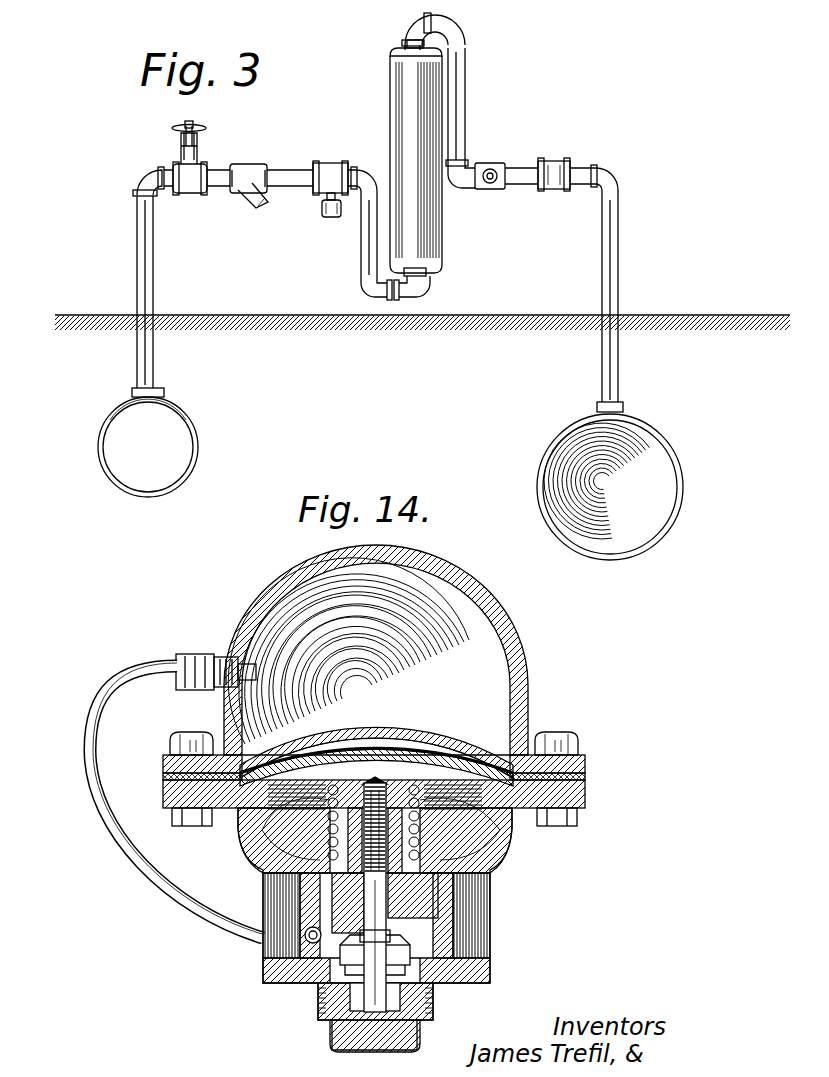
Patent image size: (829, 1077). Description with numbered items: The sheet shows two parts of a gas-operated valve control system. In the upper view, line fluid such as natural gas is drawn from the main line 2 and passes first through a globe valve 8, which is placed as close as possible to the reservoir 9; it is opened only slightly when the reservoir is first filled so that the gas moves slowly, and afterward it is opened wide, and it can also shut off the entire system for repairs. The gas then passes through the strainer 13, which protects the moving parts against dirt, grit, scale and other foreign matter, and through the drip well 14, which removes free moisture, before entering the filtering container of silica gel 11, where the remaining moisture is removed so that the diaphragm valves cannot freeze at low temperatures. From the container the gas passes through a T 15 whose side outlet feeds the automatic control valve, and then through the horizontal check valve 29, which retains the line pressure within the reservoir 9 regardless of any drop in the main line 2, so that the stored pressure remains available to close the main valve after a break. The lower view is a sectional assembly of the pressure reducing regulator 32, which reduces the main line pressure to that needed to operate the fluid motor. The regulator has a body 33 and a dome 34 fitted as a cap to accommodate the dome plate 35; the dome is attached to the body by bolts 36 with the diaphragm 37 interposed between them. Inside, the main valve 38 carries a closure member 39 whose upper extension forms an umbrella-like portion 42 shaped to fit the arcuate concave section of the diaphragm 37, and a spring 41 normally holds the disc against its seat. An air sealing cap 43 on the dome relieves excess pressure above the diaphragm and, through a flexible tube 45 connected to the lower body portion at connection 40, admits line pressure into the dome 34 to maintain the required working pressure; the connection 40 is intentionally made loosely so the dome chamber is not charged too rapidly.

In FIG. 3, the main line 2 is at (197, 428).
In FIG. 3, the globe valve 8 is at (199, 173).
In FIG. 3, the reservoir 9 is at (668, 441).
In FIG. 3, the filtering container of silica gel 11 is at (402, 108).
In FIG. 3, the strainer 13 is at (248, 168).
In FIG. 3, the drip well 14 is at (328, 167).
In FIG. 3, the T 15 is at (483, 166).
In FIG. 3, the horizontal check valve 29 is at (557, 158).
In FIG. 14, the pressure reducing regulator 32 is at (240, 844).
In FIG. 14, the body 33 is at (320, 1004).
In FIG. 14, the dome 34 is at (280, 586).
In FIG. 14, the dome plate 35 is at (356, 748).
In FIG. 14, the bolts 36 is at (166, 744).
In FIG. 14, the diaphragm 37 is at (291, 760).
In FIG. 14, the main valve 38 is at (300, 986).
In FIG. 14, the closure member 39 is at (410, 939).
In FIG. 14, the connection 40 is at (300, 940).
In FIG. 14, the spring 41 is at (440, 773).
In FIG. 14, the umbrella-like portion 42 is at (470, 782).
In FIG. 14, the air sealing cap 43 is at (188, 652).
In FIG. 14, the flexible tube 45 is at (86, 763).